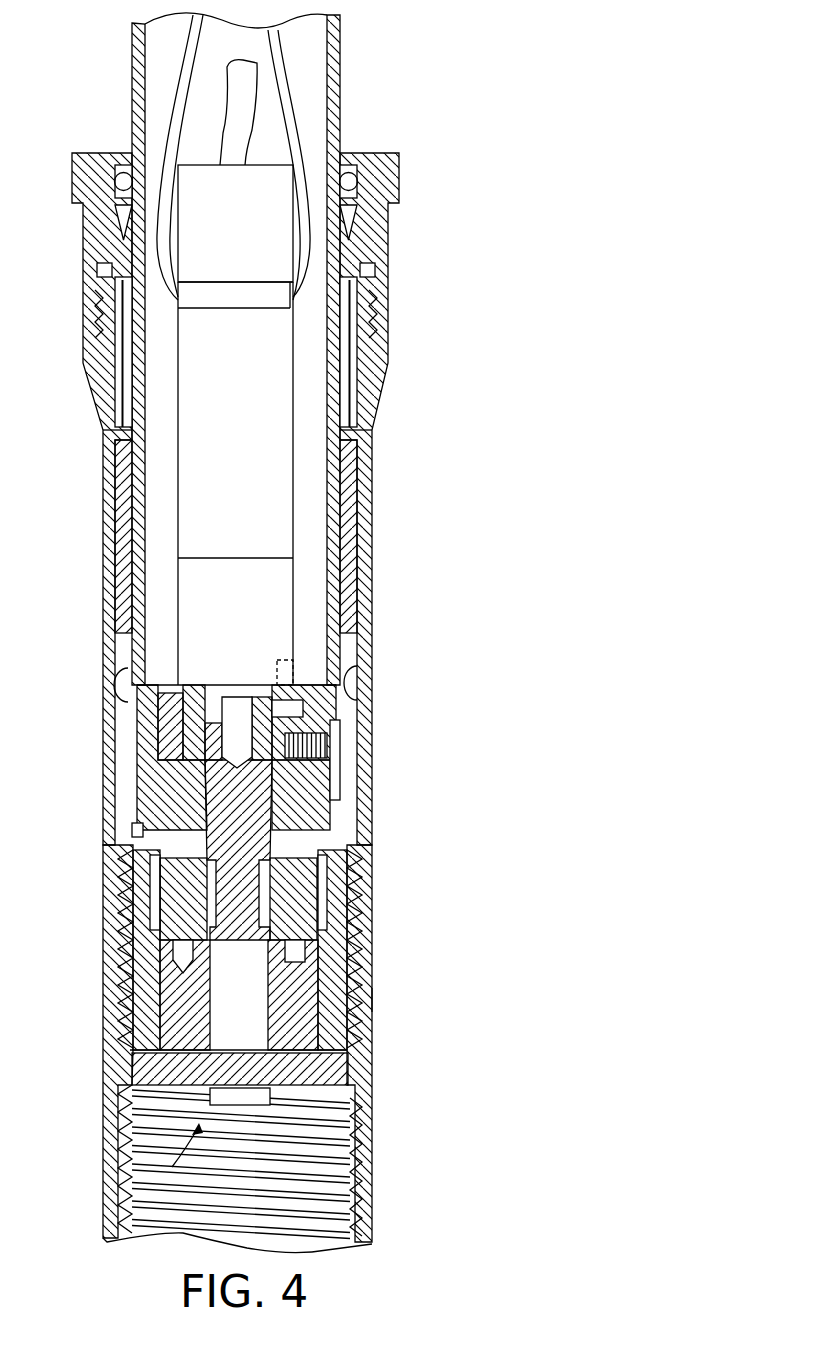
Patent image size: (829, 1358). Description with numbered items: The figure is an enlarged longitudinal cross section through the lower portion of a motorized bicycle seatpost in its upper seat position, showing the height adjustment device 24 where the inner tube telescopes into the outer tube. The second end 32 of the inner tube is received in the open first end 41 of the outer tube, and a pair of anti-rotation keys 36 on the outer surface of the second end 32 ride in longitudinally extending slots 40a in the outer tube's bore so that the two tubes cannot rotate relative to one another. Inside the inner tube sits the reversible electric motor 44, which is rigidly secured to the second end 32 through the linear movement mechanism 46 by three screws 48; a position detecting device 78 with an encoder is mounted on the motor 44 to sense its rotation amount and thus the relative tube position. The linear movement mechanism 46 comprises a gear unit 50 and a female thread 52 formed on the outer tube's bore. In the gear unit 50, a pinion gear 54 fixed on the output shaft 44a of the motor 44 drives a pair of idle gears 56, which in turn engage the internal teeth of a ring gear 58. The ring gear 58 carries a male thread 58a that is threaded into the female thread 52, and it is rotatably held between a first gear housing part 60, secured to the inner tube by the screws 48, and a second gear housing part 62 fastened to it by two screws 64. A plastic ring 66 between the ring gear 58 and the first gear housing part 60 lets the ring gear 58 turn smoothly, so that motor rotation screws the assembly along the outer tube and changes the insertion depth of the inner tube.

The height adjustment device 24 is at (444, 647).
The second end of the inner tube 32 is at (133, 795).
The anti-rotation keys 36 is at (112, 524).
The longitudinally extending slots 40a is at (120, 702).
The first end of the outer tube 41 is at (377, 268).
The reversible electric motor 44 is at (250, 472).
The output shaft 44a is at (235, 712).
The linear movement mechanism 46 is at (120, 1173).
The screws 48 is at (337, 745).
The gear unit 50 is at (114, 962).
The female thread 52 is at (353, 1197).
The pinion gear 54 is at (245, 792).
The idle gears 56 is at (185, 900).
The ring gear 58 is at (335, 970).
The male thread 58a is at (375, 1000).
The first gear housing part 60 is at (302, 817).
The second gear housing part 62 is at (130, 1137).
The screws 64 is at (360, 1131).
The plastic ring 66 is at (132, 830).
The position detecting device 78 is at (260, 233).